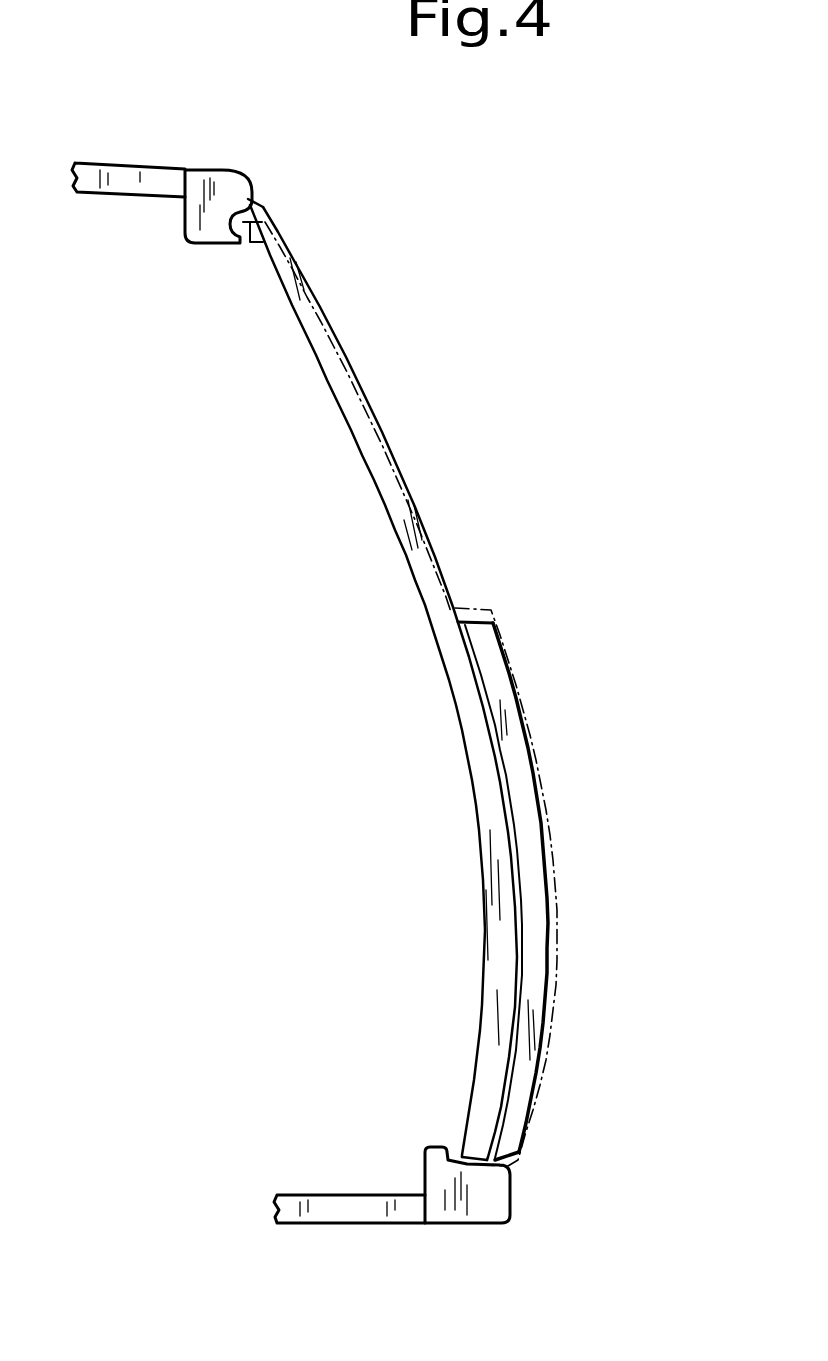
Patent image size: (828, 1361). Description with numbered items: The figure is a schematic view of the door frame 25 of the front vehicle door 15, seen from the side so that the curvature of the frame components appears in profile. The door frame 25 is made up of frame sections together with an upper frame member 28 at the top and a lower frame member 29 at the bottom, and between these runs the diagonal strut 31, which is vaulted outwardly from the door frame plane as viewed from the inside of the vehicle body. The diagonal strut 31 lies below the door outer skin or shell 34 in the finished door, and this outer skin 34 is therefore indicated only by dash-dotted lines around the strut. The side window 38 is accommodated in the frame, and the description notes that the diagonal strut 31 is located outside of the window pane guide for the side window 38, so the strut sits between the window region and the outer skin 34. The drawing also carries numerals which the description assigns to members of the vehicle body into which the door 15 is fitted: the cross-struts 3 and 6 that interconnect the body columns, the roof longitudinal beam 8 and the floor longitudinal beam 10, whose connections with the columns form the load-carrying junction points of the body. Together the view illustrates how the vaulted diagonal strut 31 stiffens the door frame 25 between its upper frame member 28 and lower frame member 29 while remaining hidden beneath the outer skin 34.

The cross-strut 3 is at (327, 1210).
The cross-strut 6 is at (127, 167).
The roof longitudinal beam 8 is at (207, 220).
The floor longitudinal beam 10 is at (473, 1203).
The front vehicle door 15 is at (493, 538).
The door frame 25 is at (390, 520).
The upper frame member 28 is at (248, 222).
The lower frame member 29 is at (477, 1145).
The diagonal strut 31 is at (532, 867).
The door outer skin or shell 34 is at (517, 680).
The side window 38 is at (345, 353).